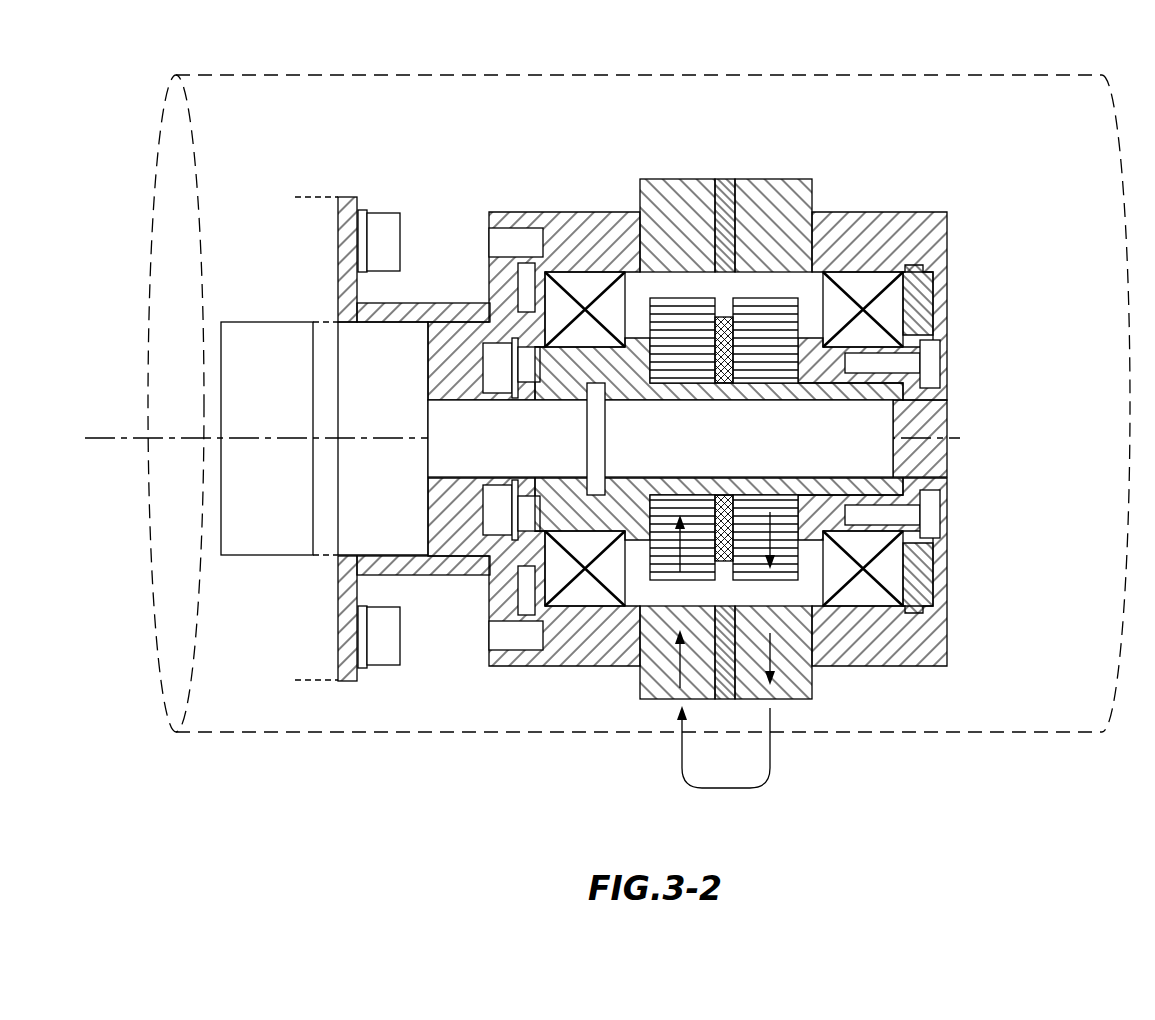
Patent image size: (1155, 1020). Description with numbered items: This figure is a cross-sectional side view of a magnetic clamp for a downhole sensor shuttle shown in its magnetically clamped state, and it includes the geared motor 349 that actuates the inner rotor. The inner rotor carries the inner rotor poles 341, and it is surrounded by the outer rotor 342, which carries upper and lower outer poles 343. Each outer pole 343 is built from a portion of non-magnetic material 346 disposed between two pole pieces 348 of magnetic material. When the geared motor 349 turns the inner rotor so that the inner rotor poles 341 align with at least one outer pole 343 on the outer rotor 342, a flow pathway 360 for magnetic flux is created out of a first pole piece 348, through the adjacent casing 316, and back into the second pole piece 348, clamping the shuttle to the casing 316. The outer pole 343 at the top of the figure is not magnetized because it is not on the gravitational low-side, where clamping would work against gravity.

The casing 316 is at (370, 740).
The inner rotor poles 341 is at (690, 384).
The outer rotor 342 is at (538, 212).
The outer pole 343 is at (637, 65).
The non-magnetic material 346 is at (727, 178).
The pole pieces 348 is at (660, 178).
The geared motor 349 is at (289, 420).
The flow pathway 360 is at (745, 788).